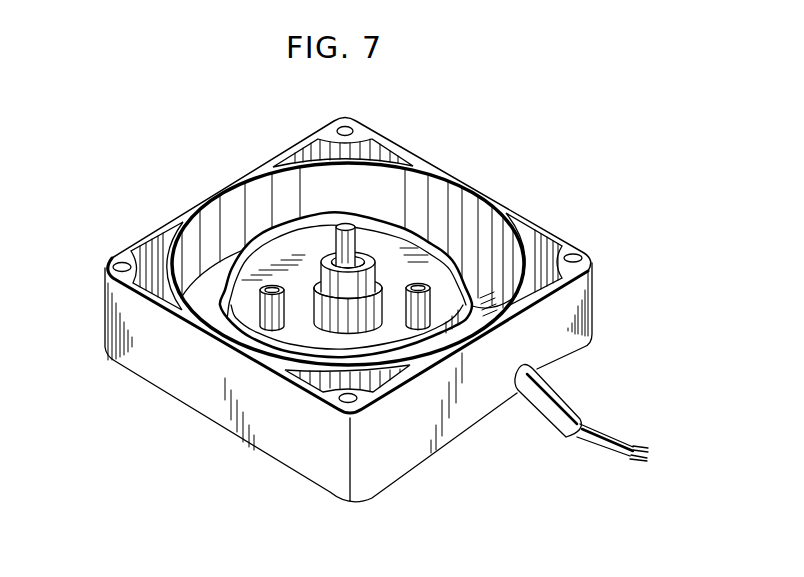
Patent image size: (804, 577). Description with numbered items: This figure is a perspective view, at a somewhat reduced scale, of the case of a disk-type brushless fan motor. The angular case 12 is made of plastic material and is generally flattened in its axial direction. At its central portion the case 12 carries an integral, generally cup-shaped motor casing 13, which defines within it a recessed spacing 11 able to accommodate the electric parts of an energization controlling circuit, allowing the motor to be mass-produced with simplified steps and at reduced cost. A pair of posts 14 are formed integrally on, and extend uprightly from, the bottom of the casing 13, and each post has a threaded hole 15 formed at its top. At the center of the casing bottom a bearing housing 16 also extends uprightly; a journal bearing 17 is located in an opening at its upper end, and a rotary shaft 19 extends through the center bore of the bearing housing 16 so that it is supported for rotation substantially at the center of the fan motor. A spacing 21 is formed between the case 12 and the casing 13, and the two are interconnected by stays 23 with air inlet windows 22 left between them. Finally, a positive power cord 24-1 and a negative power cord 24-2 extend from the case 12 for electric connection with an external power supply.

The recessed spacing 11 is at (283, 333).
The angular case 12 is at (575, 302).
The motor casing 13 is at (412, 232).
The posts 14 is at (265, 288).
The threaded hole 15 is at (272, 288).
The bearing housing 16 is at (333, 320).
The journal bearing 17 is at (326, 256).
The rotary shaft 19 is at (345, 246).
The spacing 21 is at (455, 204).
The air inlet windows 22 is at (475, 300).
The stays 23 is at (483, 305).
The positive power cord 24-1 is at (643, 445).
The negative power cord 24-2 is at (645, 466).